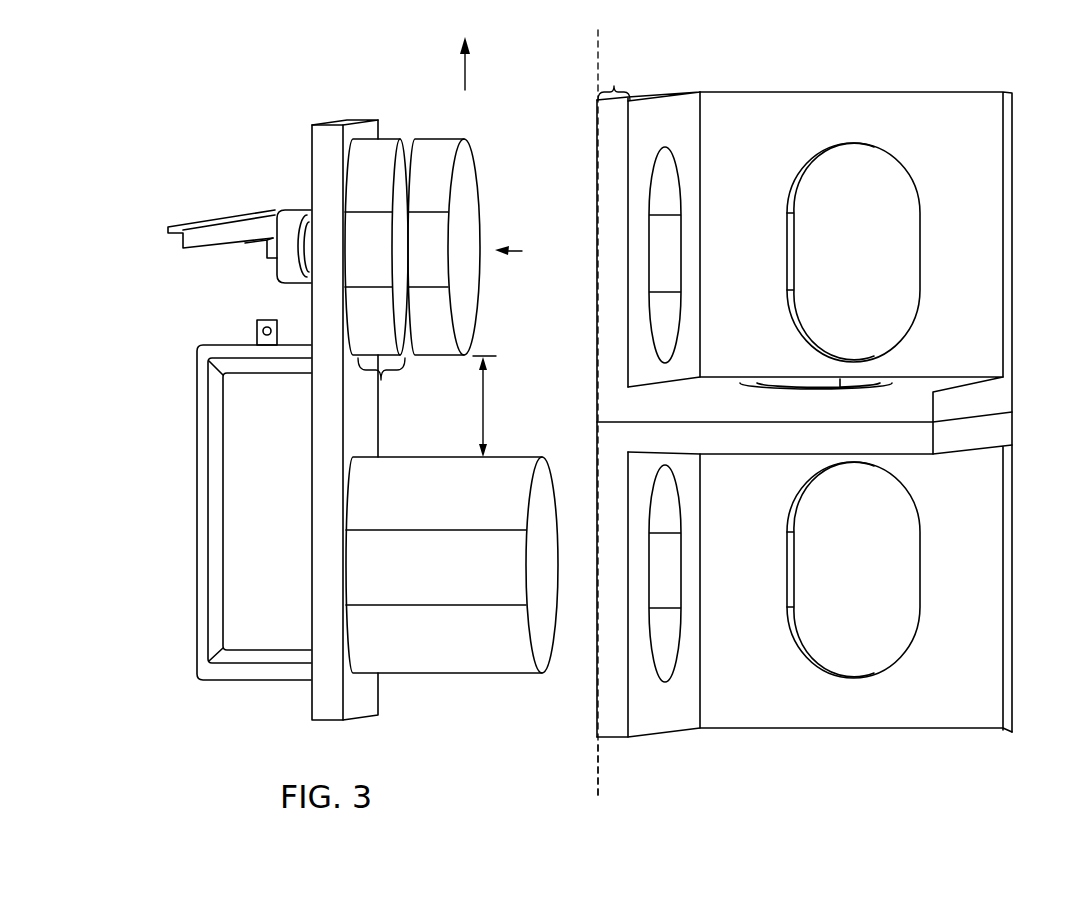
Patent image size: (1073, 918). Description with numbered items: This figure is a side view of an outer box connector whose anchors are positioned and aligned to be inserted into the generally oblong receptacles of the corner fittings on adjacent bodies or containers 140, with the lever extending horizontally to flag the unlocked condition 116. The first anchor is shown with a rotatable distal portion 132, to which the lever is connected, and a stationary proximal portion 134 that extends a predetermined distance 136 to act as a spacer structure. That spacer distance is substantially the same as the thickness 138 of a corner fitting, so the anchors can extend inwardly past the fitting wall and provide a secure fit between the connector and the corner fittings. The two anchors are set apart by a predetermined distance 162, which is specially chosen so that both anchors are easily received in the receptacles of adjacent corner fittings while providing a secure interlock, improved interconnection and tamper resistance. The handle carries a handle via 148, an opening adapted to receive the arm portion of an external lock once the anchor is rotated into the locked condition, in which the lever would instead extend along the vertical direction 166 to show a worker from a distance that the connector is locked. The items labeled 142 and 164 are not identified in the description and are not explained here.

The unlocked condition 116 is at (182, 270).
The distal portion 132 is at (430, 138).
The proximal portion 134 is at (389, 138).
The predetermined distance 136 is at (381, 381).
The thickness of corner fitting 138 is at (614, 78).
The adjacent bodies/containers 140 is at (596, 51).
The mounting plane 142 is at (596, 782).
The handle via 148 is at (263, 331).
The predetermined distance 162 is at (485, 406).
The first direction 164 is at (525, 252).
The vertical direction 166 is at (467, 75).